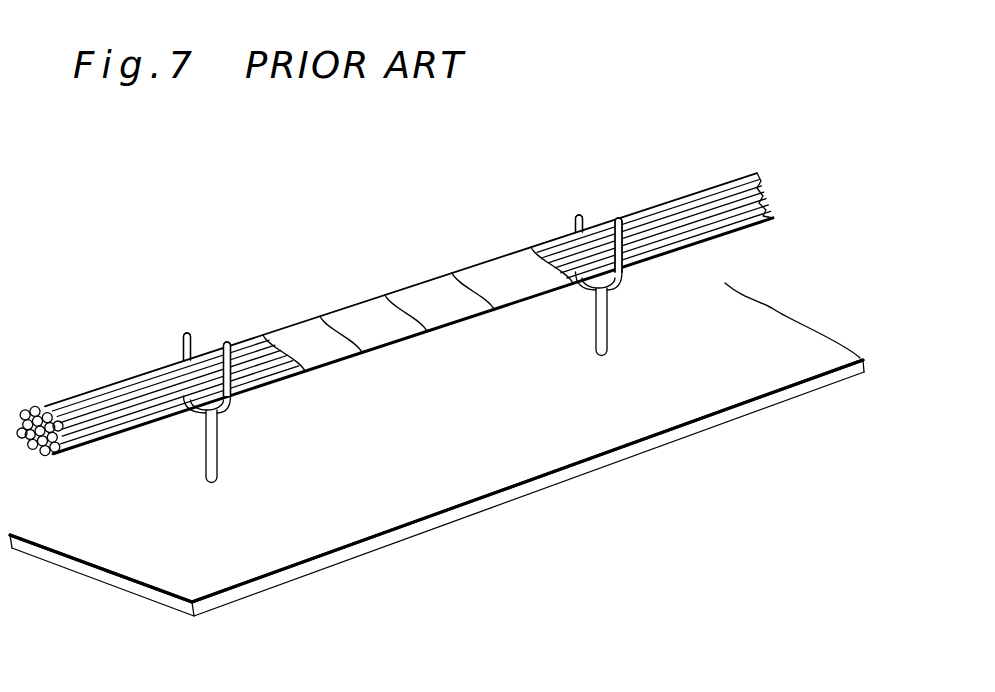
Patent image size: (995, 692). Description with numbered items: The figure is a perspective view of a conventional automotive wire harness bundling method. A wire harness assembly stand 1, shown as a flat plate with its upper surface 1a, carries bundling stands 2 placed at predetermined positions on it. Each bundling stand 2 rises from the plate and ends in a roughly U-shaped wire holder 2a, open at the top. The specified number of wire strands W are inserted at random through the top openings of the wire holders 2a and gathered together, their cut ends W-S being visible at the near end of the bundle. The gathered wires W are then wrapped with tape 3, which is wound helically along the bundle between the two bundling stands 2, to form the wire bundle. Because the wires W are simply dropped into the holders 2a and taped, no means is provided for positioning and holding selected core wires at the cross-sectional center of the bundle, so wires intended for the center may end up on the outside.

The wire harness assembly stand 1 is at (457, 516).
The plate upper surface 1a is at (555, 455).
The bundling stand 2 is at (208, 462).
The wire holder 2a is at (202, 343).
The tape 3 is at (407, 332).
The wire strand W is at (280, 378).
The wire strand ends W-S is at (24, 408).